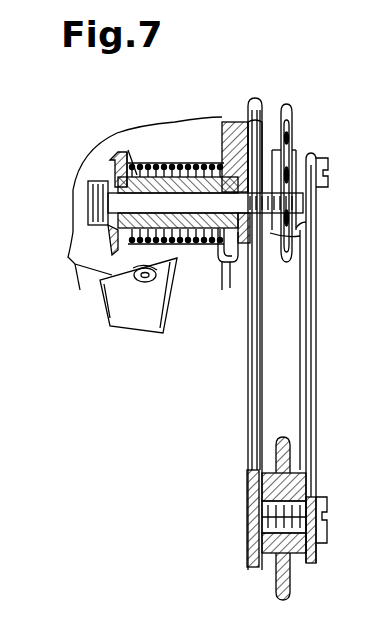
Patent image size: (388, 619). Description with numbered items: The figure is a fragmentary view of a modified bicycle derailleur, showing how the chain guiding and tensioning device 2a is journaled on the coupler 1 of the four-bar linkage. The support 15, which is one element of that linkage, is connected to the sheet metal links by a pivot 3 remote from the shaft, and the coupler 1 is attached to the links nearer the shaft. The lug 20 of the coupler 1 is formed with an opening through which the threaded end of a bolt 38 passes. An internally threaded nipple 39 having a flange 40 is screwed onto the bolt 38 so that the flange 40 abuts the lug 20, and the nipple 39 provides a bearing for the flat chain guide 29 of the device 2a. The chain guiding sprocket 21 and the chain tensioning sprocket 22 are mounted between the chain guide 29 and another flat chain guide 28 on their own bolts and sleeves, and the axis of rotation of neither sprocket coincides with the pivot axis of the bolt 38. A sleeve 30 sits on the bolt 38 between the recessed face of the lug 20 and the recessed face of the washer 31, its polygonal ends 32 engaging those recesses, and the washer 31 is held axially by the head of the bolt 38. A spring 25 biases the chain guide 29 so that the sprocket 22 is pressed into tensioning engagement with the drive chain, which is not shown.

The coupler 1 is at (206, 150).
The guiding and tensioning device 2a is at (318, 272).
The pivot 3 is at (140, 285).
The support 15 is at (73, 266).
The lug 20 is at (230, 265).
The chain guiding sprocket 21 is at (289, 138).
The chain tensioning sprocket 22 is at (280, 460).
The spring 25 is at (196, 248).
The flat chain guide 28 is at (316, 400).
The flat chain guide 29 is at (256, 383).
The sleeve 30 is at (170, 160).
The washer 31 is at (113, 170).
The polygonal ends 32 is at (240, 125).
The bolt 38 is at (103, 206).
The internally threaded nipple 39 is at (306, 222).
The flange 40 is at (300, 234).